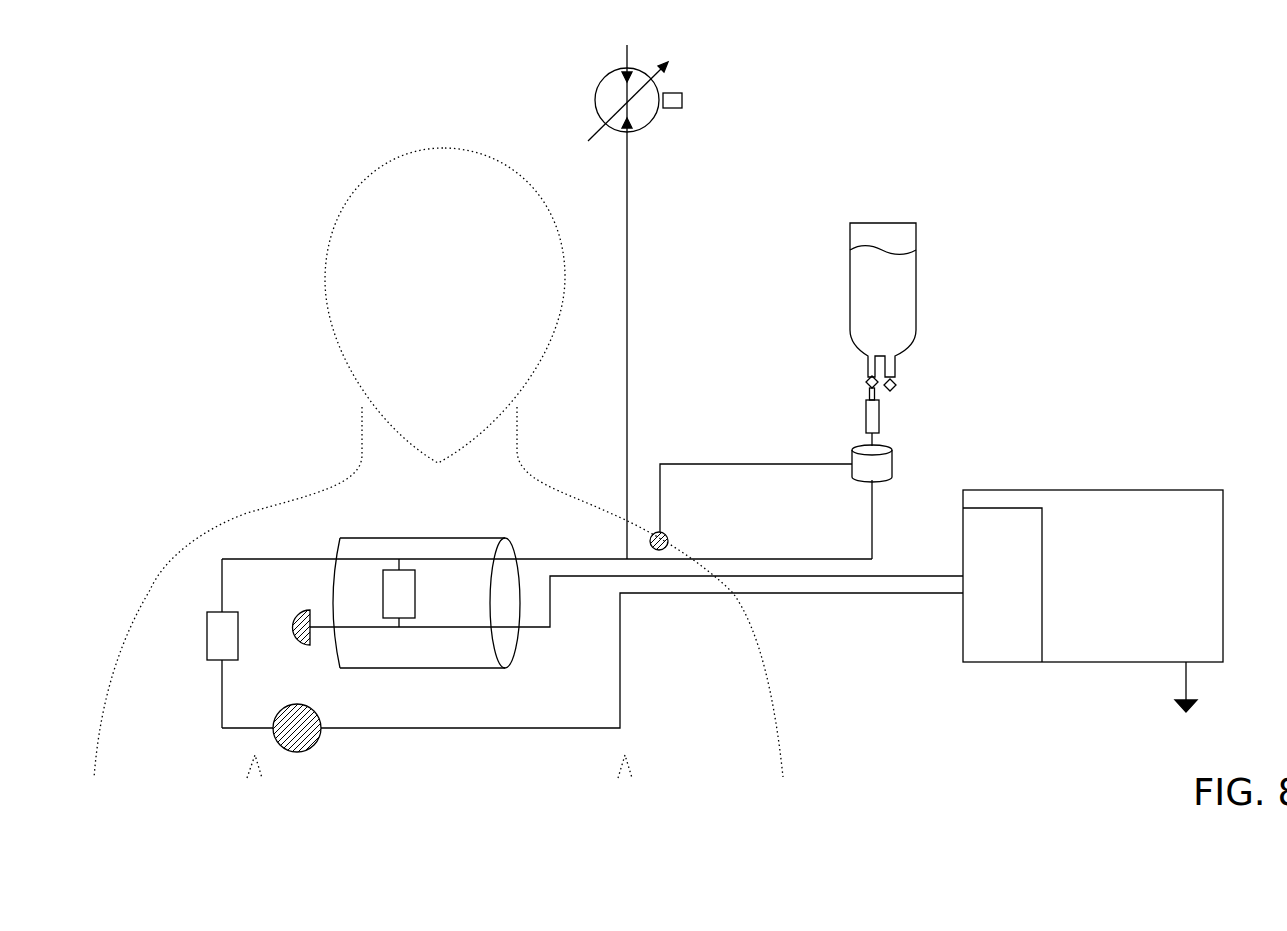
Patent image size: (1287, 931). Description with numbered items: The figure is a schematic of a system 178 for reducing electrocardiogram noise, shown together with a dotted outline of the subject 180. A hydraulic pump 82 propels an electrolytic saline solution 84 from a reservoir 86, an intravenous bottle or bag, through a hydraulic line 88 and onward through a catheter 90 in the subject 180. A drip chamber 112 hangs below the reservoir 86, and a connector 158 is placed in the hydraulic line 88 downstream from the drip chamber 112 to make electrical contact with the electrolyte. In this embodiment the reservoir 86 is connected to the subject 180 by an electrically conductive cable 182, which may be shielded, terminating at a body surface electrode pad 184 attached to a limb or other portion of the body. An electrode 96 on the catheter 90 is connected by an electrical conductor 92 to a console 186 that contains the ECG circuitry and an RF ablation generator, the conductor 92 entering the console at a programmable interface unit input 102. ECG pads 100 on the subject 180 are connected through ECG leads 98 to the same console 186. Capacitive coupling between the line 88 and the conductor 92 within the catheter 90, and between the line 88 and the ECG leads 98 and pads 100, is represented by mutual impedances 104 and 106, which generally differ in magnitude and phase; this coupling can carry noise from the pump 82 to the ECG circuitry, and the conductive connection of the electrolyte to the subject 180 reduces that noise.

The system 178 is at (401, 76).
The subject 180 is at (322, 278).
The hydraulic pump 82 is at (592, 100).
The hydraulic line 88 is at (627, 190).
The saline solution 84 is at (907, 285).
The reservoir 86 is at (850, 232).
The drip chamber 112 is at (866, 415).
The connector 158 is at (892, 462).
The electrically conductive cable 182 is at (716, 464).
The body surface electrode pad 184 is at (668, 538).
The catheter 90 is at (424, 538).
The mutual impedance 104 is at (415, 594).
The electrical conductor 92 is at (585, 578).
The electrode 96 is at (297, 632).
The mutual impedance 106 is at (207, 645).
The ECG leads 98 is at (455, 730).
The ECG pads 100 is at (298, 752).
The console 186 is at (1080, 490).
The programmable interface unit input 102 is at (1008, 507).